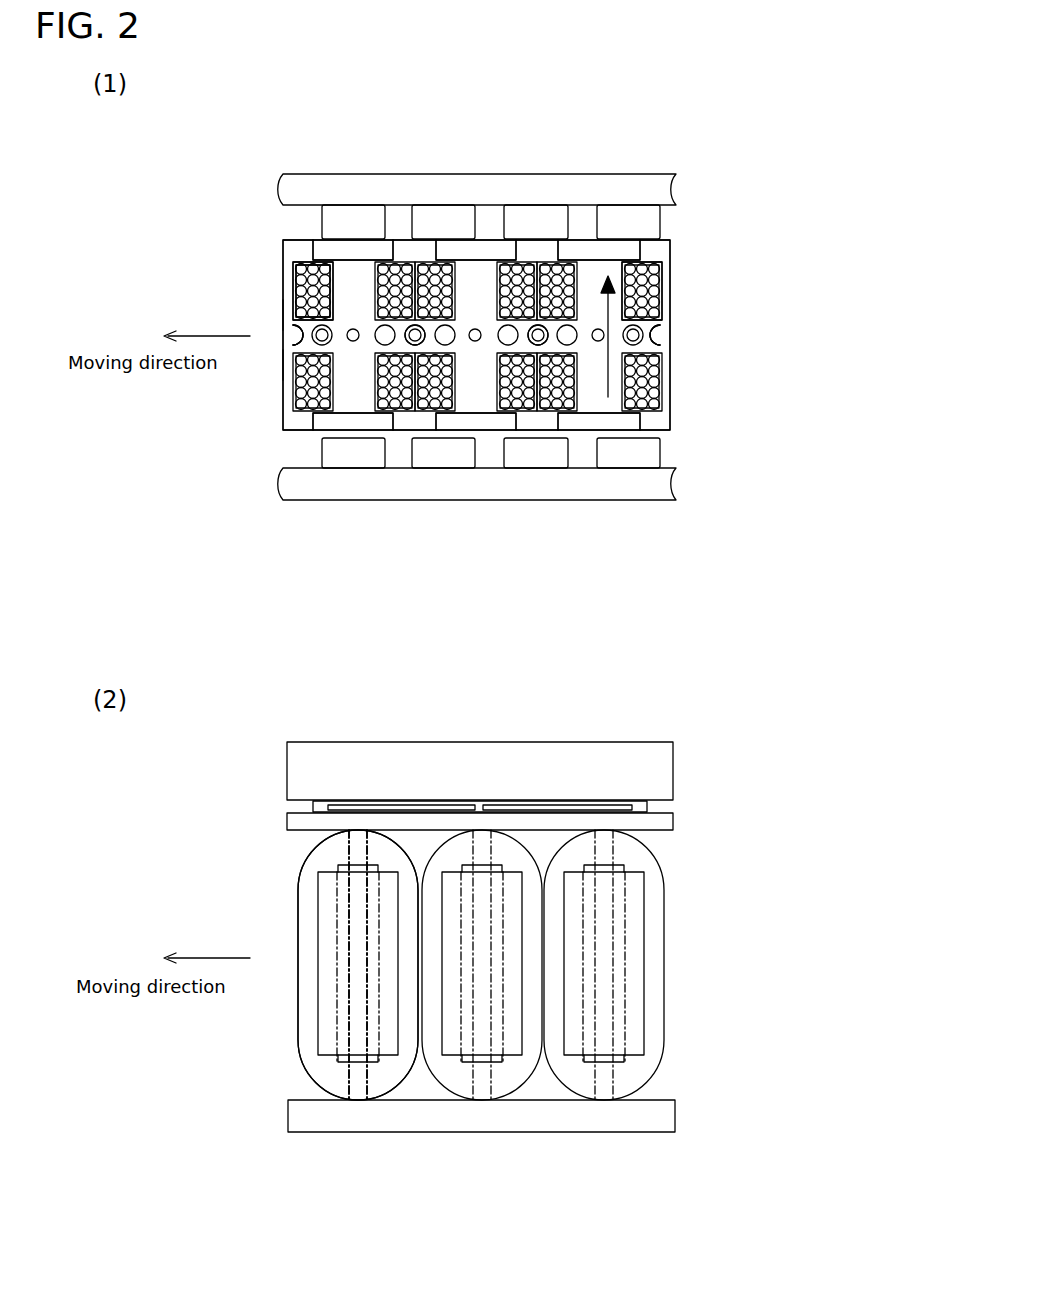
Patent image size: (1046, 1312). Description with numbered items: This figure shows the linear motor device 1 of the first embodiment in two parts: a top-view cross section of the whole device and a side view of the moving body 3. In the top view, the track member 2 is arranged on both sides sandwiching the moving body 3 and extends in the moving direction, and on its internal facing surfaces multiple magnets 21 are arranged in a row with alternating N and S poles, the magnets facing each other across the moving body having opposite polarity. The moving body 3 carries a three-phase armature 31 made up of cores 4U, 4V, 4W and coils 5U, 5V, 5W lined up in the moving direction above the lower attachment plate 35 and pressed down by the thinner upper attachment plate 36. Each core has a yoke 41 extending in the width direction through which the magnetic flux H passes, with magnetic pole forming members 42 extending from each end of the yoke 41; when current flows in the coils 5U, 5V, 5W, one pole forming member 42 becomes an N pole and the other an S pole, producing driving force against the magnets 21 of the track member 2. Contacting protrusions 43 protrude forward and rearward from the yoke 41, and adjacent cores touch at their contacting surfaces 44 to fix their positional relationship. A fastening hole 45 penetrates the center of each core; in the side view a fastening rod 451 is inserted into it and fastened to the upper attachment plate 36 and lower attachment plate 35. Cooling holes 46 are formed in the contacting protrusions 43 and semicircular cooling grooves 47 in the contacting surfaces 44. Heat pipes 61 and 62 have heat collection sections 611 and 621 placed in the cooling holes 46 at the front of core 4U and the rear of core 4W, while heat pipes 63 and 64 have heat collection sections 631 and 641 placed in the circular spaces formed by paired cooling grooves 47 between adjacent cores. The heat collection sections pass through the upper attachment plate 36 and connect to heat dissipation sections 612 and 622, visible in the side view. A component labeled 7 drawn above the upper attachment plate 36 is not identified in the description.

The linear motor device 1 is at (230, 126).
The track member 2 is at (477, 175).
The magnet 21 is at (352, 204).
The moving body 3 is at (686, 239).
The armature 31 is at (665, 277).
The lower attachment plate 35 is at (283, 249).
The upper attachment plate 36 is at (287, 822).
The top plate 7 is at (283, 737).
The yoke 41 is at (344, 291).
The magnetic pole forming member 42 is at (314, 250).
The contacting protrusion 43 is at (292, 306).
The contacting surface 44 is at (283, 325).
The fastening hole 45 is at (355, 300).
The fastening rod 451 is at (358, 965).
The cooling hole 46 is at (291, 346).
The cooling groove 47 is at (283, 365).
The heat pipe 61 is at (223, 397).
The heat pipe heat collection section 611 is at (202, 397).
The heat pipe heat dissipation section 612 is at (315, 808).
The heat pipe 62 is at (765, 355).
The heat pipe heat collection section 621 is at (742, 355).
The heat pipe heat dissipation section 622 is at (646, 808).
The heat pipe 63 is at (447, 211).
The heat pipe heat collection section 631 is at (414, 324).
The heat pipe 64 is at (583, 231).
The heat pipe heat collection section 641 is at (540, 324).
The front side core 4U is at (350, 405).
The center core 4V is at (470, 410).
The rear side core 4W is at (593, 400).
The coil 5U is at (296, 384).
The coil 5V is at (530, 414).
The coil 5W is at (658, 383).
The magnetic flux H is at (596, 400).